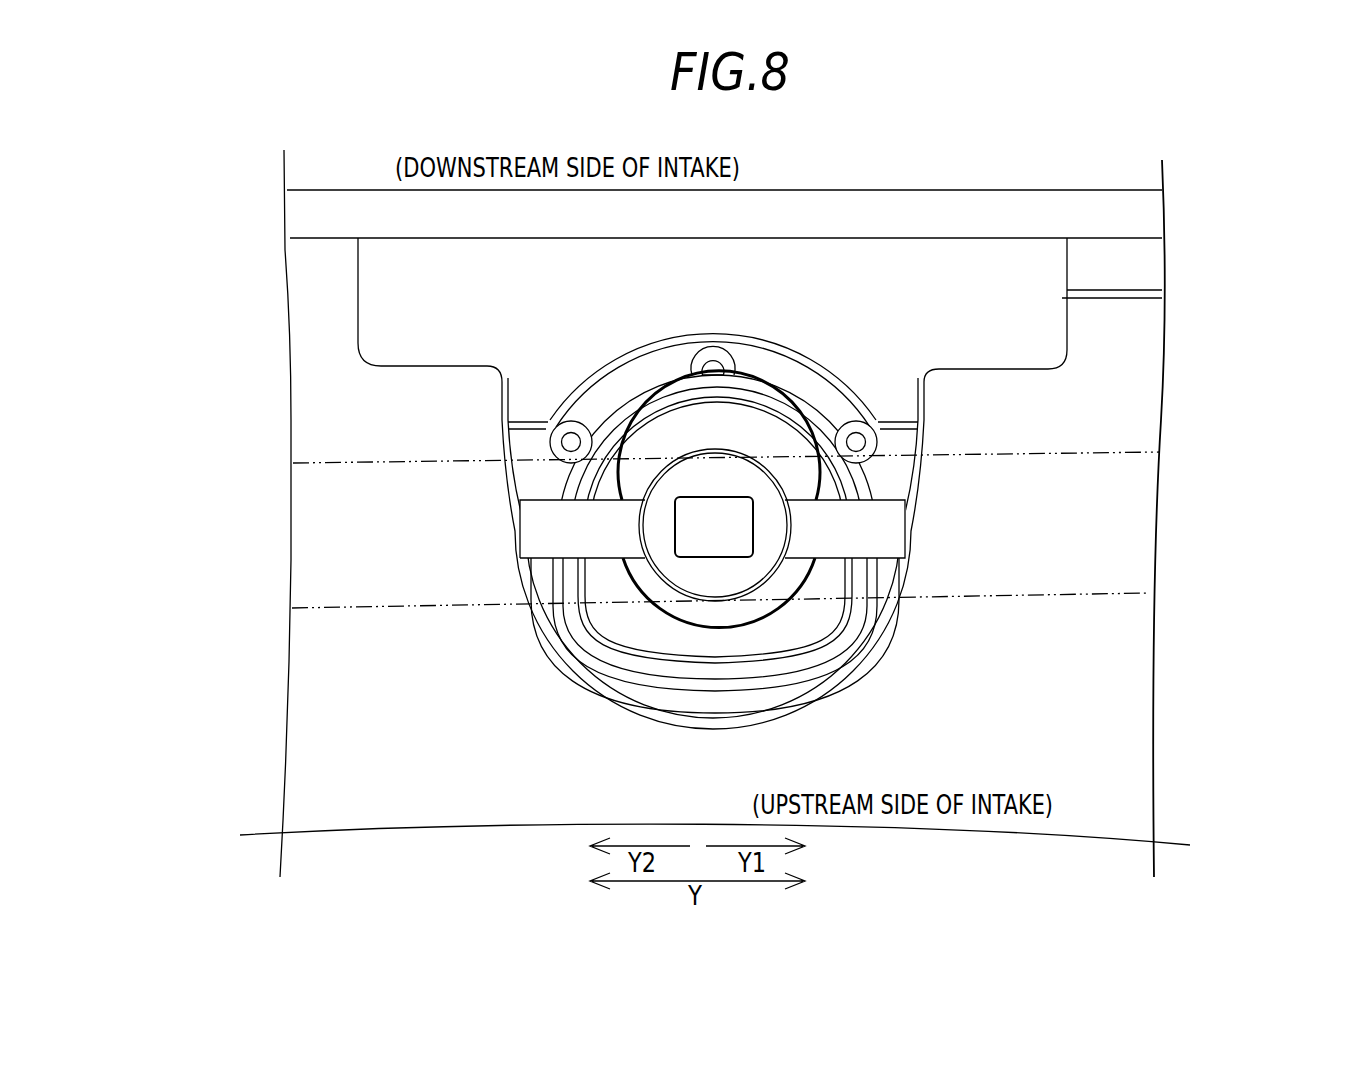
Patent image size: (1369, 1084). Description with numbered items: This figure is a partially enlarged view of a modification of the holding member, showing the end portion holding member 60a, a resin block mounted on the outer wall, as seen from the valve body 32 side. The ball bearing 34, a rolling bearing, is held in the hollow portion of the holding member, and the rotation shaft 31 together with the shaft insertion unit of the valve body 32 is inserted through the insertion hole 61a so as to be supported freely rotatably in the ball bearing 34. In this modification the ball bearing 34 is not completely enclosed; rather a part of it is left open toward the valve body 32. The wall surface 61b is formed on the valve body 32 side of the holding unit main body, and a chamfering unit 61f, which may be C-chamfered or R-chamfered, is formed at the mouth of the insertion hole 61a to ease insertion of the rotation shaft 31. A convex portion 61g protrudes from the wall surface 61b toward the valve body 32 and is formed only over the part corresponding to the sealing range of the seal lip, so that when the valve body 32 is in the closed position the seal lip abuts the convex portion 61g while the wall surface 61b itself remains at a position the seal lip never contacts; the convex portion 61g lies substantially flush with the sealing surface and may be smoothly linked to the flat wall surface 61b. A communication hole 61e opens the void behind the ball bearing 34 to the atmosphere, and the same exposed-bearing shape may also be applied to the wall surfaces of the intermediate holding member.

The end portion holding member 60a is at (812, 272).
The wall surface 61b is at (515, 447).
The communication hole 61e is at (867, 437).
The chamfering unit 61f is at (635, 542).
The convex portion 61g is at (875, 533).
The valve body 32 is at (1067, 595).
The rotation shaft 31 is at (730, 540).
The ball bearing 34 is at (815, 632).
The insertion hole 61a is at (683, 595).